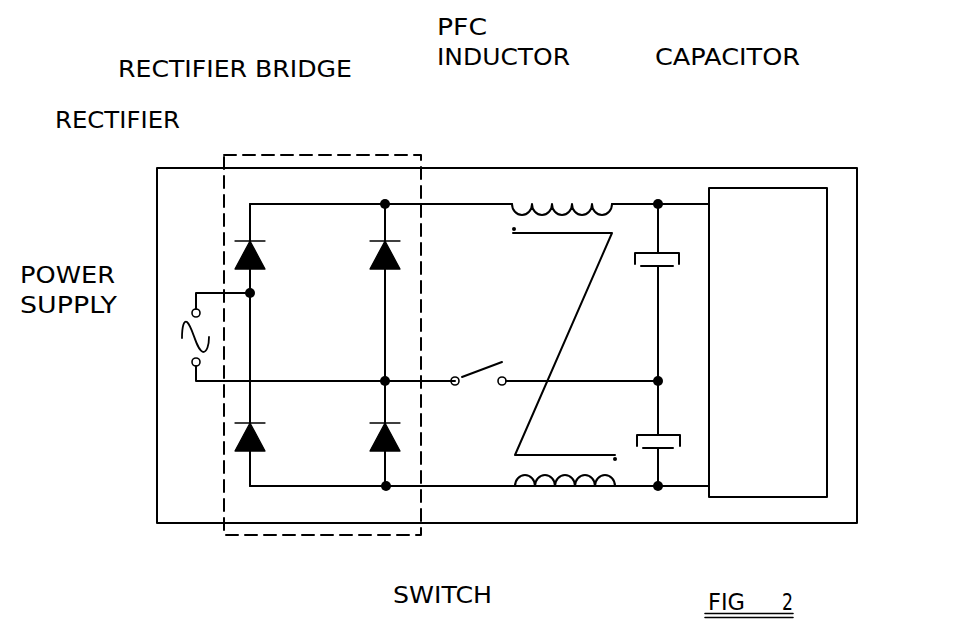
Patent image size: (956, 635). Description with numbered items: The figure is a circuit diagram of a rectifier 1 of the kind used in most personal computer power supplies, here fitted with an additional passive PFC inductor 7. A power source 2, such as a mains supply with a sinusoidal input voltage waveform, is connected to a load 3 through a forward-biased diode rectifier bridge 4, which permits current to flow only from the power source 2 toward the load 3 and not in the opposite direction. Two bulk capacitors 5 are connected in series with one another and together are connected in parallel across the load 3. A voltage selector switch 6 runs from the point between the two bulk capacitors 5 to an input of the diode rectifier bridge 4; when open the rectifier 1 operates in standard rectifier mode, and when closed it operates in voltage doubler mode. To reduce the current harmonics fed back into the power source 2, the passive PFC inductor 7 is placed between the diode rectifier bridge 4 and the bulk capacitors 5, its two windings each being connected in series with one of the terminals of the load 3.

The rectifier 1 is at (67, 137).
The power source 2 is at (188, 323).
The load 3 is at (801, 187).
The diode rectifier bridge 4 is at (363, 155).
The bulk capacitors 5 is at (678, 257).
The voltage selector switch 6 is at (474, 378).
The passive PFC inductor 7 is at (562, 205).